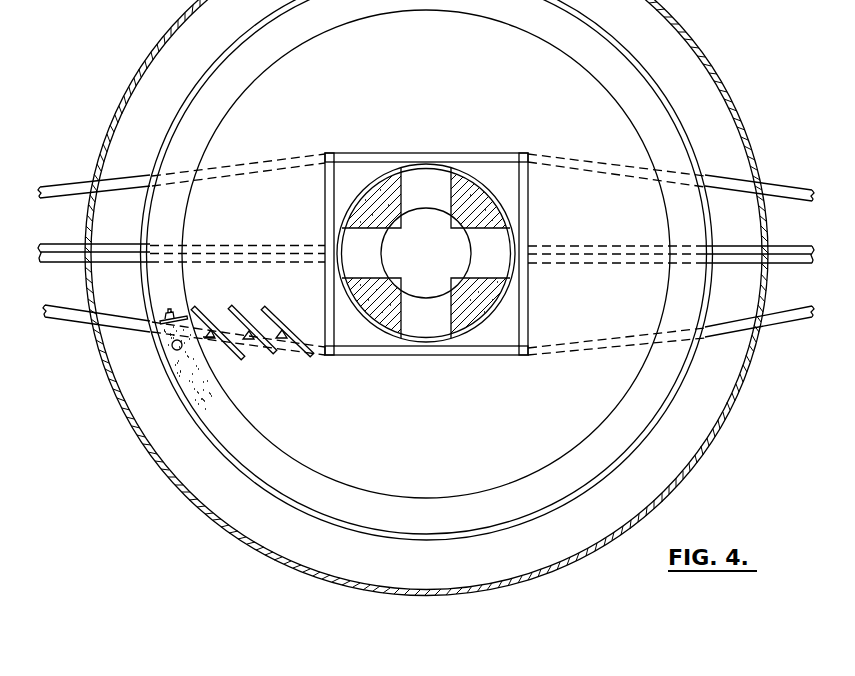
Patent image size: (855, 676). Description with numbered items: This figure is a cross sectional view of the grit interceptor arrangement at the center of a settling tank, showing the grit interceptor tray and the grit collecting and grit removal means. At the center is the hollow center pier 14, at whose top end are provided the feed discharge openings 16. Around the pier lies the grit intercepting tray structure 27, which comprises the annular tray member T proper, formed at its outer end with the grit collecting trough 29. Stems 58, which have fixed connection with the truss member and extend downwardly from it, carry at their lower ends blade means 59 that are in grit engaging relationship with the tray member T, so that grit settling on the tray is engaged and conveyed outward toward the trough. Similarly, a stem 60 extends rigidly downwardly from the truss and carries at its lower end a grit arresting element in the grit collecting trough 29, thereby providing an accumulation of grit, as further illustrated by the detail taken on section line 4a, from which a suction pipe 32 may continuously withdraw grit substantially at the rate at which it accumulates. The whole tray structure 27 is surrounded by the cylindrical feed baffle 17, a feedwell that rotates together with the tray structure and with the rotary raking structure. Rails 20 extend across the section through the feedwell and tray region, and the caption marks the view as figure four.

The hollow center pier 14 is at (500, 203).
The feed discharge openings 16 is at (355, 262).
The cylindrical feed baffle 17 is at (745, 126).
The rails 20 is at (58, 182).
The tray structure 27 is at (413, 455).
The grit collecting trough 29 is at (170, 231).
The suction pipe 32 is at (174, 341).
The stems 58 is at (242, 338).
The blade means 59 is at (302, 340).
The stem 60 is at (163, 318).
The annular tray member T is at (460, 453).
The section line 4a is at (128, 290).